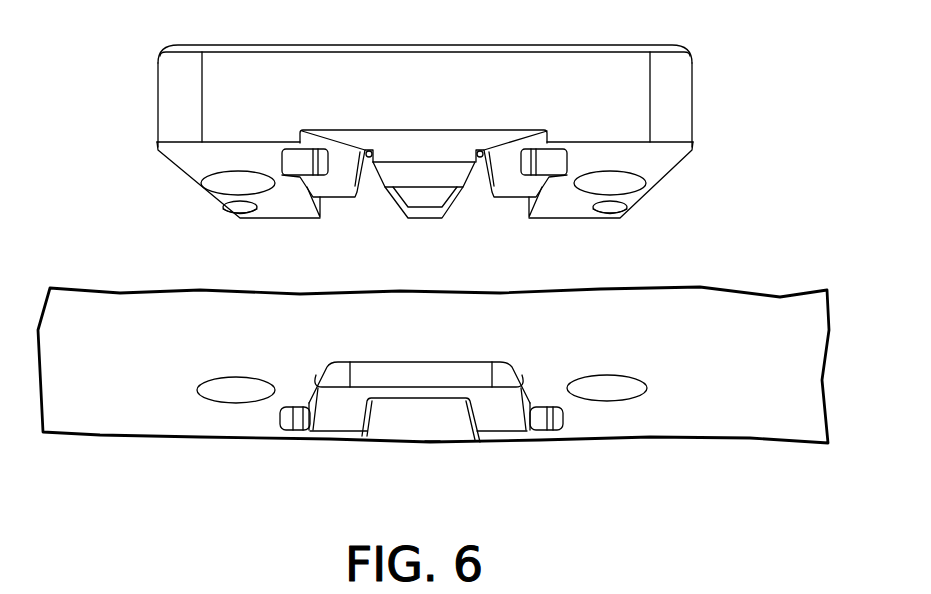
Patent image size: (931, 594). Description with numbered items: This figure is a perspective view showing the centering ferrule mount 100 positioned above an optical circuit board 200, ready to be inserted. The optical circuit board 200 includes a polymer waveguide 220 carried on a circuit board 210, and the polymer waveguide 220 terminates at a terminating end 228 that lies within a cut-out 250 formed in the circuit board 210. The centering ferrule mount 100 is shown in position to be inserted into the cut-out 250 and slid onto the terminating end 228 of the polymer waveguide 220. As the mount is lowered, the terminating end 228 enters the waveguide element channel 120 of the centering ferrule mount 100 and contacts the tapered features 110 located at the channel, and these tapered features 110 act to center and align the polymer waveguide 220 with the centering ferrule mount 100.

The centering ferrule mount 100 is at (138, 112).
The tapered features 110 is at (368, 156).
The waveguide element channel 120 is at (437, 153).
The optical circuit board 200 is at (433, 355).
The circuit board 210 is at (733, 380).
The polymer waveguide 220 is at (433, 432).
The terminating end 228 is at (421, 375).
The cut-out 250 is at (521, 421).